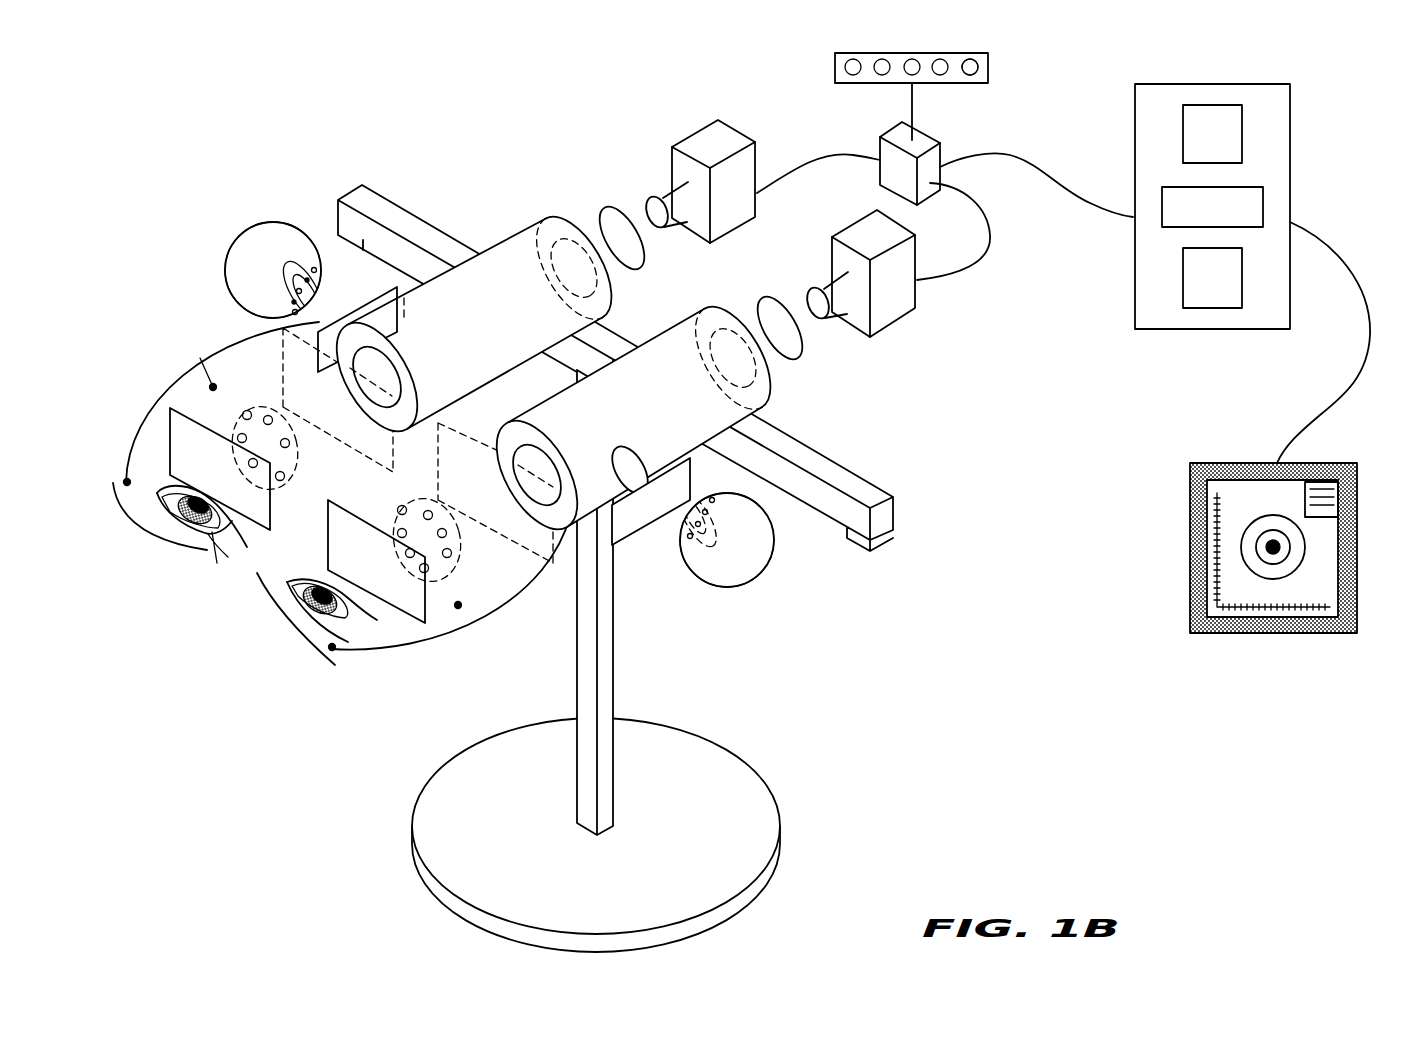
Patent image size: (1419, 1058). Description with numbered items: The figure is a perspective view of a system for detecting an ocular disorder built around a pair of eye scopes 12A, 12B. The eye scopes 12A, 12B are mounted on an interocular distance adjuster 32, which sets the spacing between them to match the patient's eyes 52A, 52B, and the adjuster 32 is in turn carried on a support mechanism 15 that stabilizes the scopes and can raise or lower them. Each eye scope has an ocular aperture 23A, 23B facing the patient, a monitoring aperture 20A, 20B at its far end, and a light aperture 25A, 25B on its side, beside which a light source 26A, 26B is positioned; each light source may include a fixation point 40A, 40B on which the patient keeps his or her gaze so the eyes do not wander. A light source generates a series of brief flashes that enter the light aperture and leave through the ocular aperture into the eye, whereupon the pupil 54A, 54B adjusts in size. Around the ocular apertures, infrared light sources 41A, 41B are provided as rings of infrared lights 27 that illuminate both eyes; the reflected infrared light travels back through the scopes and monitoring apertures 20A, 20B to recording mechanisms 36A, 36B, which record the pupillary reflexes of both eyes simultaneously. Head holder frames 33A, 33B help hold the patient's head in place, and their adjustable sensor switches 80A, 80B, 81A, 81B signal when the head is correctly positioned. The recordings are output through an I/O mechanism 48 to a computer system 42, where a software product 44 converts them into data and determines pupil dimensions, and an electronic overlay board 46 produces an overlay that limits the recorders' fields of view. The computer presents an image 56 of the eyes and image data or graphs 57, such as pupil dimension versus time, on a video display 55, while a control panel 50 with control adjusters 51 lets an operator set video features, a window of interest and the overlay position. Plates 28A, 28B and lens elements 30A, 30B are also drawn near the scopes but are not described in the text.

The eye scope 12A is at (537, 302).
The eye scope 12B is at (696, 399).
The support mechanism 15 is at (758, 787).
The monitoring aperture 20A is at (562, 233).
The monitoring aperture 20B is at (720, 333).
The ocular aperture 23A is at (385, 381).
The ocular aperture 23B is at (540, 474).
The light aperture 25A is at (404, 321).
The light aperture 25B is at (625, 450).
The light source 26A is at (228, 283).
The light source 26B is at (742, 585).
The infrared lights 27 is at (297, 464).
The first shield plate 28A is at (347, 318).
The second shield plate 28B is at (650, 517).
The first objective lens 30A is at (614, 208).
The second objective lens 30B is at (802, 345).
The interocular distance adjuster 32 is at (833, 465).
The head holder frame 33A is at (183, 374).
The head holder frame 33B is at (435, 646).
The recording mechanism 36A is at (702, 137).
The recording mechanism 36B is at (898, 312).
The fixation point 40A is at (234, 247).
The fixation point 40B is at (767, 563).
The infrared light source 41A is at (298, 470).
The infrared light source 41B is at (457, 572).
The computer system 42 is at (1303, 98).
The software product 44 is at (1228, 294).
The electronic overlay board 46 is at (1228, 222).
The I/O mechanism 48 is at (1228, 150).
The control panel 50 is at (987, 66).
The control adjusters 51 is at (970, 75).
The eye 52A is at (296, 582).
The eye 52B is at (288, 583).
The pupil 54A is at (227, 526).
The pupil 54B is at (345, 612).
The video display 55 is at (1236, 462).
The image 56 is at (1305, 545).
The image data/graphs 57 is at (1332, 505).
The sensor switch 80A is at (213, 387).
The sensor switch 80B is at (458, 605).
The sensor switch 81A is at (127, 482).
The sensor switch 81B is at (332, 647).